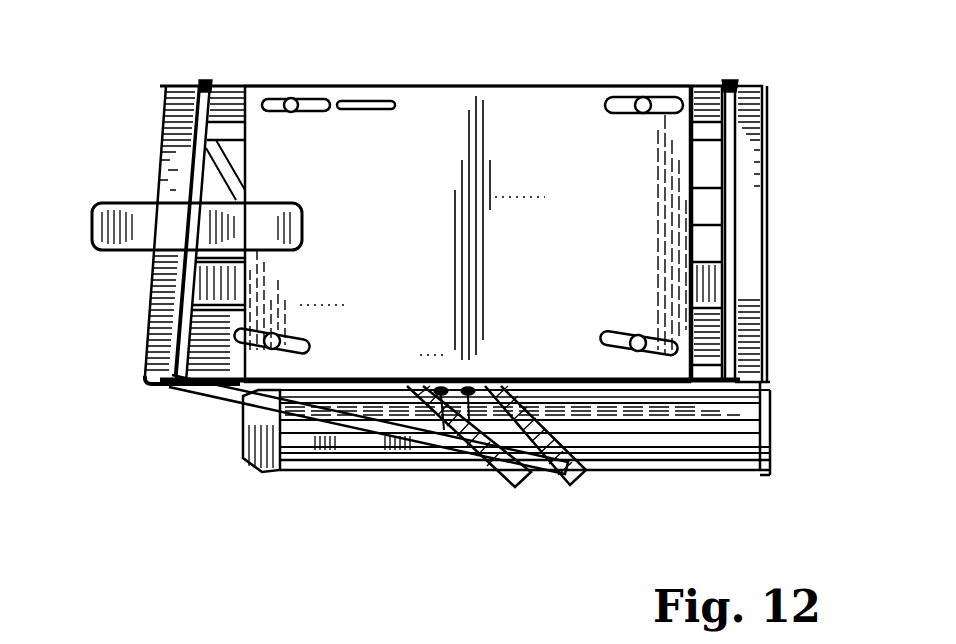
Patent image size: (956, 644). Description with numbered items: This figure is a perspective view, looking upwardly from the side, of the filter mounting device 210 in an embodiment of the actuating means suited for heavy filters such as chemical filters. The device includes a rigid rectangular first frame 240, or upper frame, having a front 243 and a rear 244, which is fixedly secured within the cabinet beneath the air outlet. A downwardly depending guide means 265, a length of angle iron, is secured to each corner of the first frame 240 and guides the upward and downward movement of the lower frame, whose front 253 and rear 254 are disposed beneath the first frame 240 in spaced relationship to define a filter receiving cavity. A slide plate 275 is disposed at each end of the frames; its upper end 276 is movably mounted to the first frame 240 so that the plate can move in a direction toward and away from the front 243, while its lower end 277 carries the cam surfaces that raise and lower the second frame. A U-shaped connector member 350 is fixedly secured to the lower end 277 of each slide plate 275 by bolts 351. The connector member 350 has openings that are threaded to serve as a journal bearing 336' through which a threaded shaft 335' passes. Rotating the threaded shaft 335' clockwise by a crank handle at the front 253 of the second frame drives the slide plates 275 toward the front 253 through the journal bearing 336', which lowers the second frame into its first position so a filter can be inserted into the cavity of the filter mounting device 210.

The filter mounting device 210 is at (745, 73).
The front of first frame 243 is at (166, 91).
The first frame 240 is at (220, 87).
The slide plate 275 is at (526, 98).
The upper end of slide plate 276 is at (589, 86).
The rear of first frame 244 is at (768, 107).
The guide means (angle iron) 265 is at (758, 194).
The rear of second frame 254 is at (768, 349).
The front of second frame 253 is at (146, 301).
The lower end of slide plate 277 is at (225, 406).
The threaded shaft 335' is at (460, 444).
The bolt 351 is at (443, 396).
The journal bearing 336' is at (498, 485).
The U-shaped connector member 350 is at (545, 487).